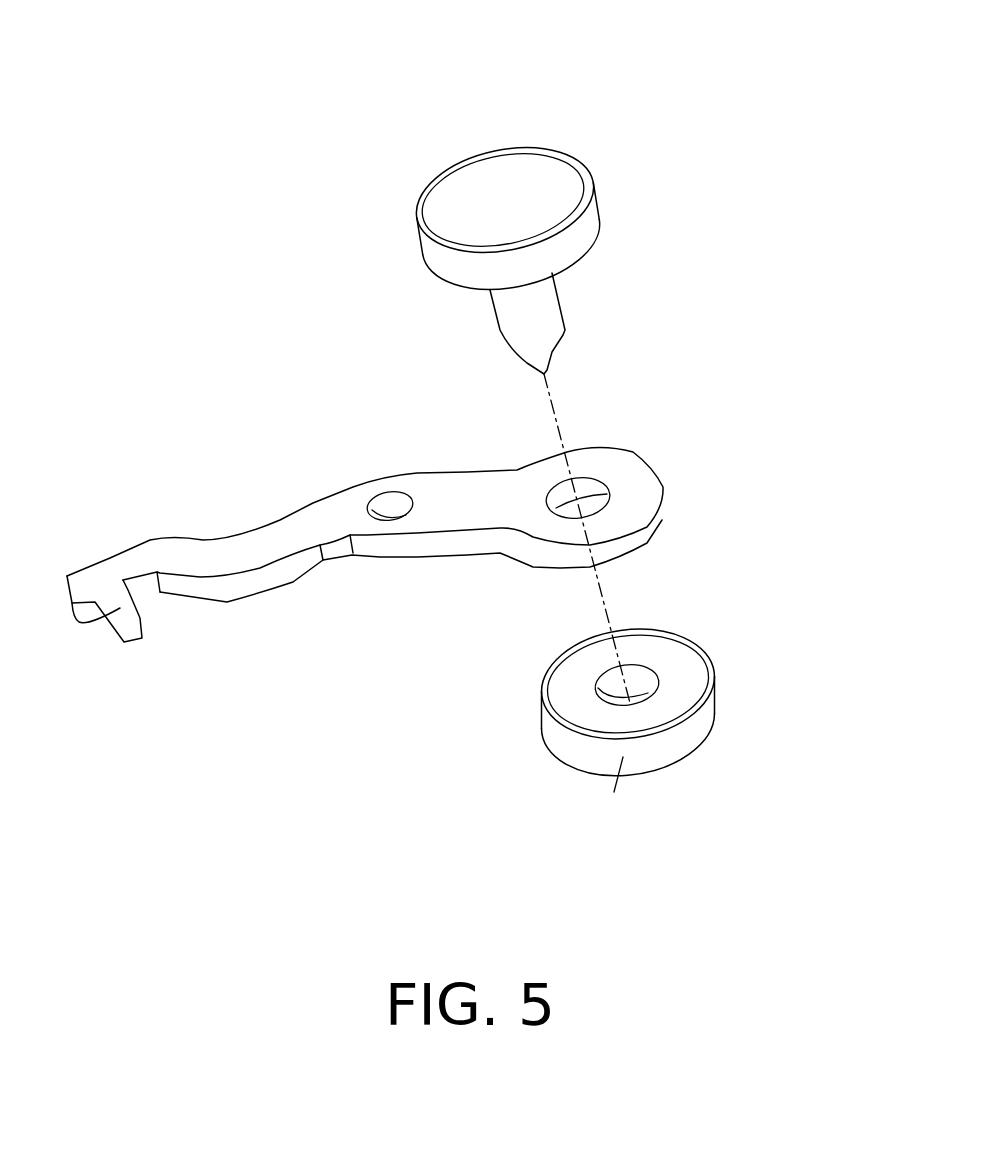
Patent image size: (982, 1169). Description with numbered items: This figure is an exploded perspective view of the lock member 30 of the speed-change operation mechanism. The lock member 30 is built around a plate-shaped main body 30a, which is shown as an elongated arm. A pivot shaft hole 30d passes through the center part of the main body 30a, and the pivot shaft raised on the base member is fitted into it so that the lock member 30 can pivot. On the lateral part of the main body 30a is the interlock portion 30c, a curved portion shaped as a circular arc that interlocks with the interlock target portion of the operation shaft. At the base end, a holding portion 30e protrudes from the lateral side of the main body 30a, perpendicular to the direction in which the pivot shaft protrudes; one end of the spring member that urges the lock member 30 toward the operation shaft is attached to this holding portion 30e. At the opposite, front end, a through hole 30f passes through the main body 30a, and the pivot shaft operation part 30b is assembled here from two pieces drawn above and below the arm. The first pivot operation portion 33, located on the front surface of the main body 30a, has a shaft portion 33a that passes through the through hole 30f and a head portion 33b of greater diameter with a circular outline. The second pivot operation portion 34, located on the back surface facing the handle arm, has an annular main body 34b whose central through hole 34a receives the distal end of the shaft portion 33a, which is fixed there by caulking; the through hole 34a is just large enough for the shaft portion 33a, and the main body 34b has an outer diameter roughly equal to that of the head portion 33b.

The lock member 30 is at (708, 160).
The main body 30a is at (330, 473).
The pivot shaft operation part 30b is at (597, 157).
The interlock portion 30c is at (233, 541).
The pivot shaft hole 30d is at (407, 493).
The holding portion 30e is at (107, 636).
The through hole 30f is at (607, 482).
The first pivot operation portion 33 is at (528, 153).
The shaft portion 33a is at (550, 315).
The head portion 33b is at (587, 225).
The second pivot operation portion 34 is at (723, 698).
The through hole 34a is at (602, 698).
The main body 34b is at (620, 758).